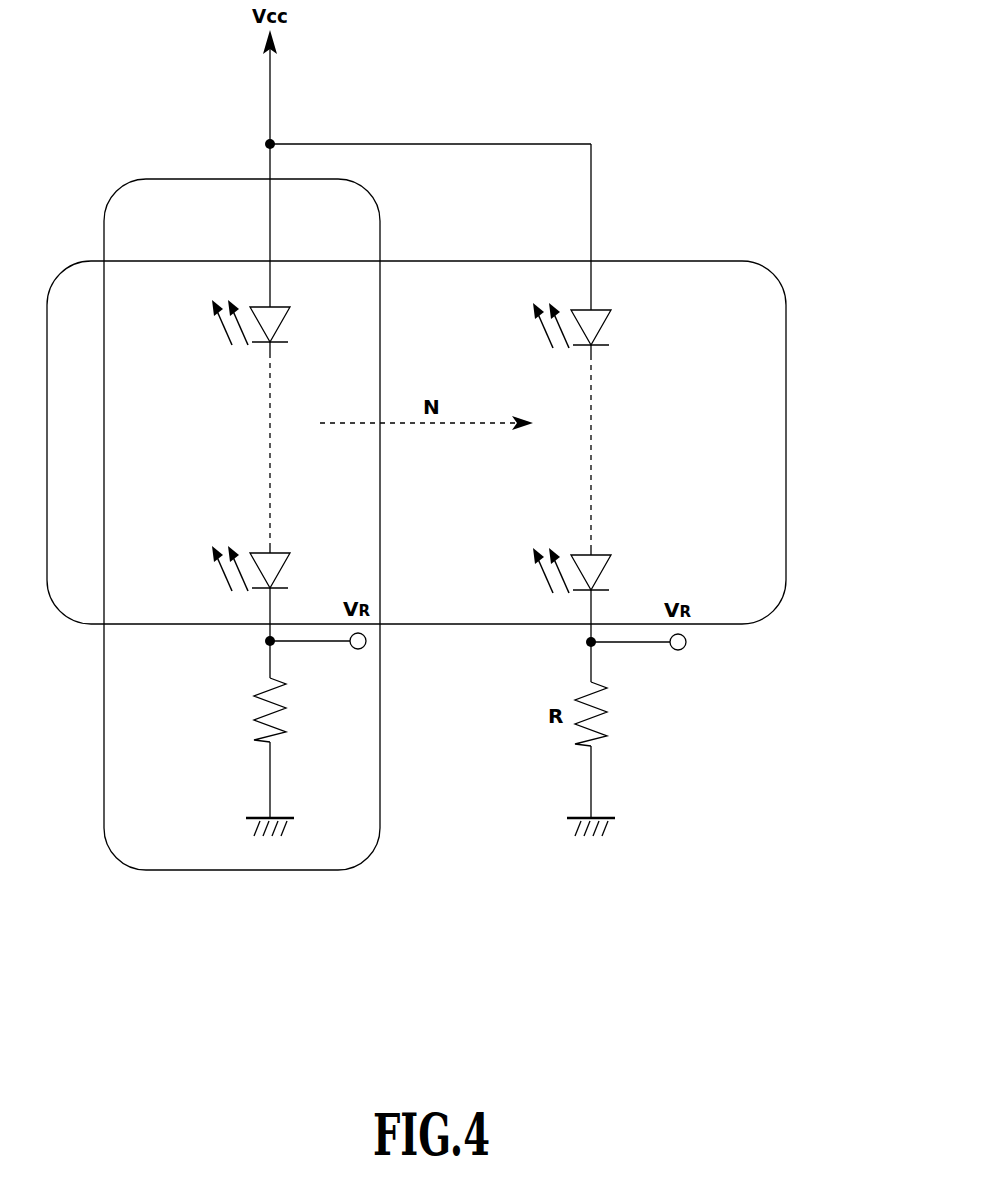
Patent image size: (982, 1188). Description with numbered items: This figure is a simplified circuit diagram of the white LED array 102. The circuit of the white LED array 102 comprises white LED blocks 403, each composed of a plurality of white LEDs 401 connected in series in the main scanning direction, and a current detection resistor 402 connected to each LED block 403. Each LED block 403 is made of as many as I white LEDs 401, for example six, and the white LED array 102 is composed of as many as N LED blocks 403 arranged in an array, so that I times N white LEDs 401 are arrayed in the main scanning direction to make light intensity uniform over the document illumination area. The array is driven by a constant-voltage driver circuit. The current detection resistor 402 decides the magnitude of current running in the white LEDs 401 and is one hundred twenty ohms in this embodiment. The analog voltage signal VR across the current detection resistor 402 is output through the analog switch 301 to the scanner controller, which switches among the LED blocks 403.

The white LED array 102 is at (727, 261).
The white LED 401 is at (251, 341).
The current detection resistor 402 is at (247, 721).
The white LED block 403 is at (180, 302).
The analog switch 301 is at (585, 671).